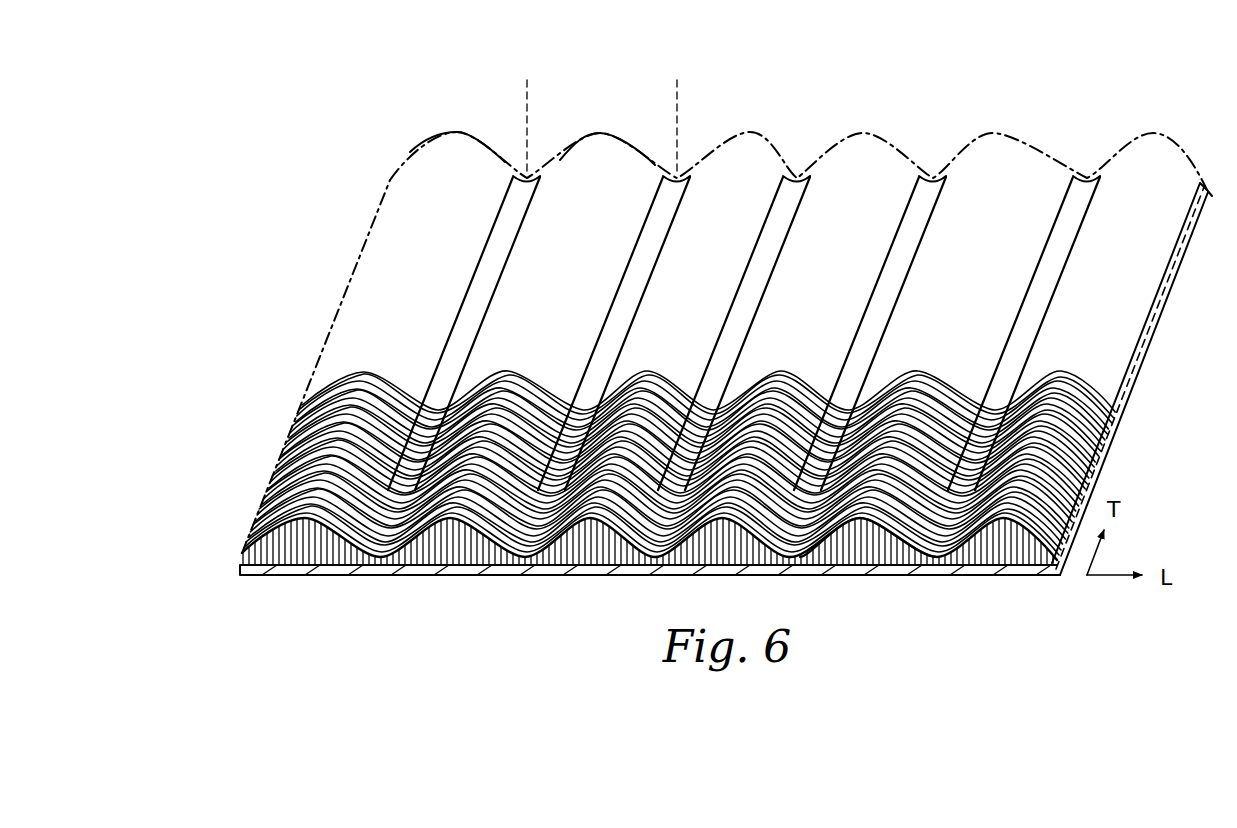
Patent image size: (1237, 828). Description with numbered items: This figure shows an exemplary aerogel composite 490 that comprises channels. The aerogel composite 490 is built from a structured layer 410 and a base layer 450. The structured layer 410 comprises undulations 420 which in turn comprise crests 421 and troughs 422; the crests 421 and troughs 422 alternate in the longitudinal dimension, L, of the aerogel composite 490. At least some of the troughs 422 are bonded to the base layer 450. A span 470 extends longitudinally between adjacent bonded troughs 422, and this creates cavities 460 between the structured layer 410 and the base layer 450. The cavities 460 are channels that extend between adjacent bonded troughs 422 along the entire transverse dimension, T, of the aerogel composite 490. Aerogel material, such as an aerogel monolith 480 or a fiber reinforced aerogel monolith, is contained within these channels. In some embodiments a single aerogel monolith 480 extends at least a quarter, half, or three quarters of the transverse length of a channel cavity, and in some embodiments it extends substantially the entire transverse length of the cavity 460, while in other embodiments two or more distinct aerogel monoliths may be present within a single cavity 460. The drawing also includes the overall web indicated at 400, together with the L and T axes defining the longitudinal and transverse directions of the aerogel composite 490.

The nonwoven web 400 is at (300, 338).
The structured layer 410 is at (368, 247).
The undulations 420 is at (493, 148).
The crests 421 is at (1010, 131).
The troughs 422 is at (384, 572).
The base layer 450 is at (312, 580).
The cavities 460 is at (478, 560).
The span 470 is at (669, 100).
The aerogel monolith 480 is at (866, 540).
The aerogel composite 490 is at (298, 128).